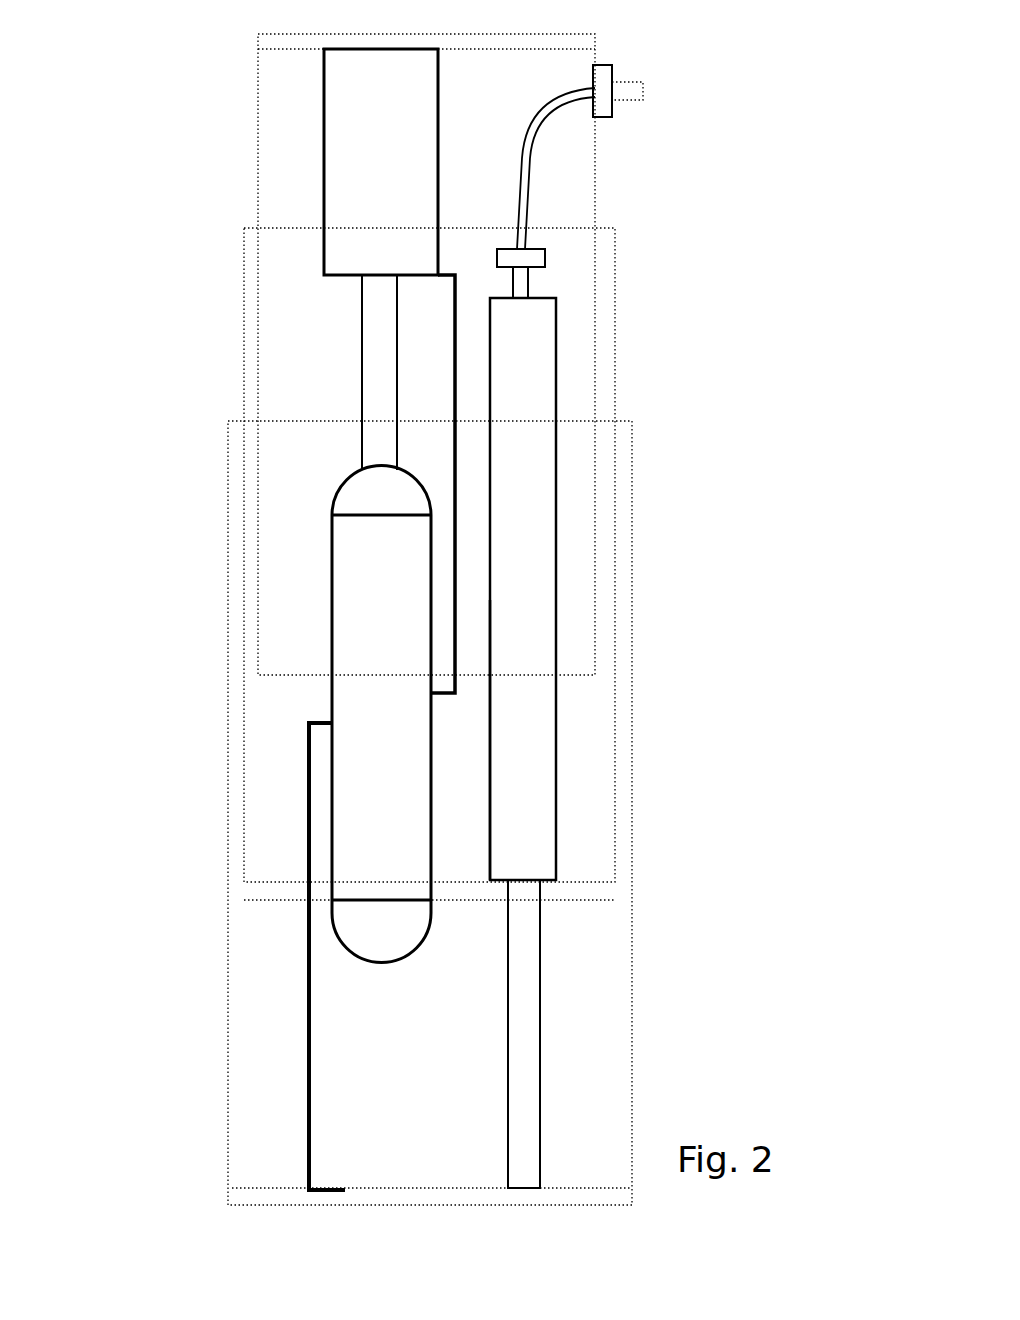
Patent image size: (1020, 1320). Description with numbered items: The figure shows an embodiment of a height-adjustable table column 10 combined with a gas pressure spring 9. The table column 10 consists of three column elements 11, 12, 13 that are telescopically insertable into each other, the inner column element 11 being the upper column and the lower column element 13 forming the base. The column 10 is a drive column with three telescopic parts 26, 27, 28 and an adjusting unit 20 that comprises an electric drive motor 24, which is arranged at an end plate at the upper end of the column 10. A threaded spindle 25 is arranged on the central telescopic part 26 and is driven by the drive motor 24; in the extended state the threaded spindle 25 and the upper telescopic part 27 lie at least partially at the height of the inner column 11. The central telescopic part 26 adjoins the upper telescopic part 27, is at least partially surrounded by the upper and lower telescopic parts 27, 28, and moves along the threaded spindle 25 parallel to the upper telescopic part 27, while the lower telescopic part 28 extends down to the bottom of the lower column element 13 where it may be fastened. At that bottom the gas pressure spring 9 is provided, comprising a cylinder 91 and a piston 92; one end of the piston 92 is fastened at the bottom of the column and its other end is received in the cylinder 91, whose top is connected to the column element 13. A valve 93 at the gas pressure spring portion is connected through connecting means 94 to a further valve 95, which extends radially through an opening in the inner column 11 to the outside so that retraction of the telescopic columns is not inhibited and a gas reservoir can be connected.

The gas pressure spring 9 is at (557, 588).
The table column 10 is at (645, 373).
The inner column element 11 is at (257, 118).
The column element 12 is at (630, 490).
The lower column element 13 is at (243, 315).
The adjusting unit 20 is at (318, 90).
The drive motor 24 is at (323, 158).
The threaded spindle 25 is at (360, 343).
The central telescopic part 26 is at (330, 550).
The upper telescopic part 27 is at (452, 380).
The lower telescopic part 28 is at (305, 767).
The cylinder 91 is at (552, 712).
The piston 92 is at (543, 944).
The valve 93 is at (530, 278).
The connecting means 94 is at (530, 153).
The valve 95 is at (612, 74).